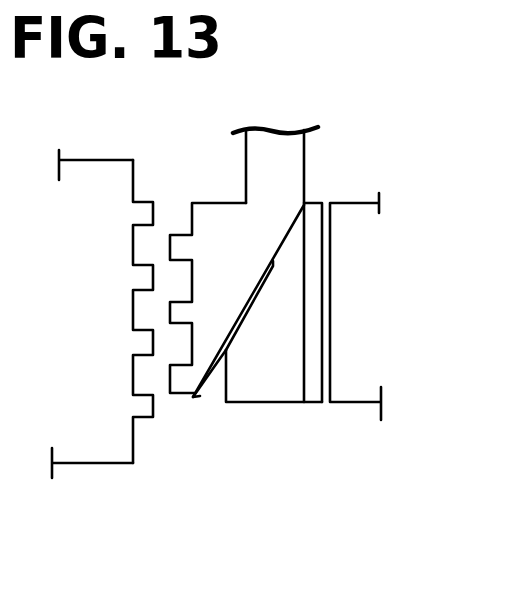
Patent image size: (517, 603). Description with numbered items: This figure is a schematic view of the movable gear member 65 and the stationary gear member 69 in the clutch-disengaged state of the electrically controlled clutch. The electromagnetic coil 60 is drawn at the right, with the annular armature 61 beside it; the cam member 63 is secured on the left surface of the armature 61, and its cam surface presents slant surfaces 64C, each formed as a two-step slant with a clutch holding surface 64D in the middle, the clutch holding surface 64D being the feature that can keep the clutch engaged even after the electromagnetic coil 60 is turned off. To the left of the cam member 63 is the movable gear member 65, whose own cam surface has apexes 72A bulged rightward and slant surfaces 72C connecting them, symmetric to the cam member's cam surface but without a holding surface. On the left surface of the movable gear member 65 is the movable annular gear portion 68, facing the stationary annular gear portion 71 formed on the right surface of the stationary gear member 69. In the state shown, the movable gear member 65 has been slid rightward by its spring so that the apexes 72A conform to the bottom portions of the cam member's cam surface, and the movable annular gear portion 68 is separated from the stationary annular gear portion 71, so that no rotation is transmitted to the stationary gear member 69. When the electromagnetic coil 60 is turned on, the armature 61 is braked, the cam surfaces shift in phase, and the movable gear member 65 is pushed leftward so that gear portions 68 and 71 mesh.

The electromagnetic coil 60 is at (358, 370).
The armature 61 is at (312, 390).
The cam member 63 is at (267, 385).
The slant surface 64C is at (291, 228).
The clutch holding surface 64D is at (273, 263).
The movable gear member 65 is at (268, 158).
The movable annular gear portion 68 is at (183, 245).
The stationary gear member 69 is at (82, 435).
The stationary annular gear portion 71 is at (145, 410).
The apex 72A is at (304, 157).
The slant surface 72C is at (212, 367).